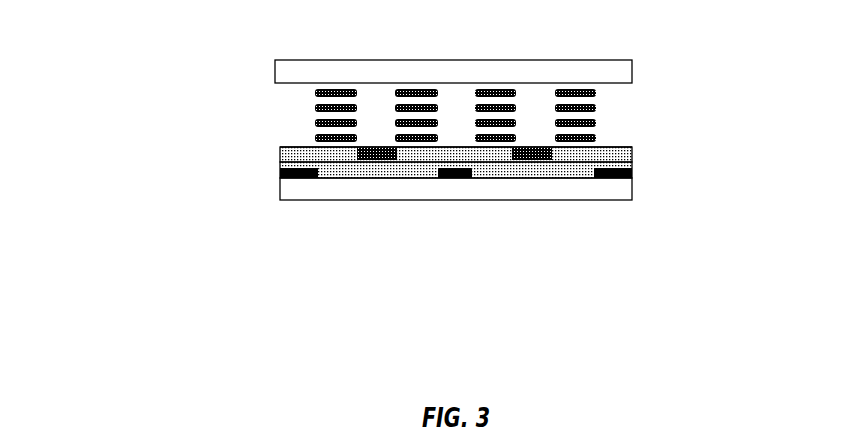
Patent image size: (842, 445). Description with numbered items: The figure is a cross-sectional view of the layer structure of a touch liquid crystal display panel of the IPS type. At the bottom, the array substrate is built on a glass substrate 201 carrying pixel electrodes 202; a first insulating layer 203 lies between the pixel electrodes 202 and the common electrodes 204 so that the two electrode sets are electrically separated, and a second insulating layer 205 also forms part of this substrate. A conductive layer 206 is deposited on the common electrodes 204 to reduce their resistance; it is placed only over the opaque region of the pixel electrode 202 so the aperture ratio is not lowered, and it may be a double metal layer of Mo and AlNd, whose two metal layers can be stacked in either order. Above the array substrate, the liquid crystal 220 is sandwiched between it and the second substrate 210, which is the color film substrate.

The glass substrate 201 is at (580, 192).
The pixel electrodes 202 is at (632, 173).
The first insulating layer 203 is at (372, 170).
The common electrodes 204 is at (580, 147).
The second insulating layer 205 is at (279, 153).
The conductive layer 206 is at (288, 96).
The second substrate 210 is at (573, 72).
The liquid crystal 220 is at (597, 108).